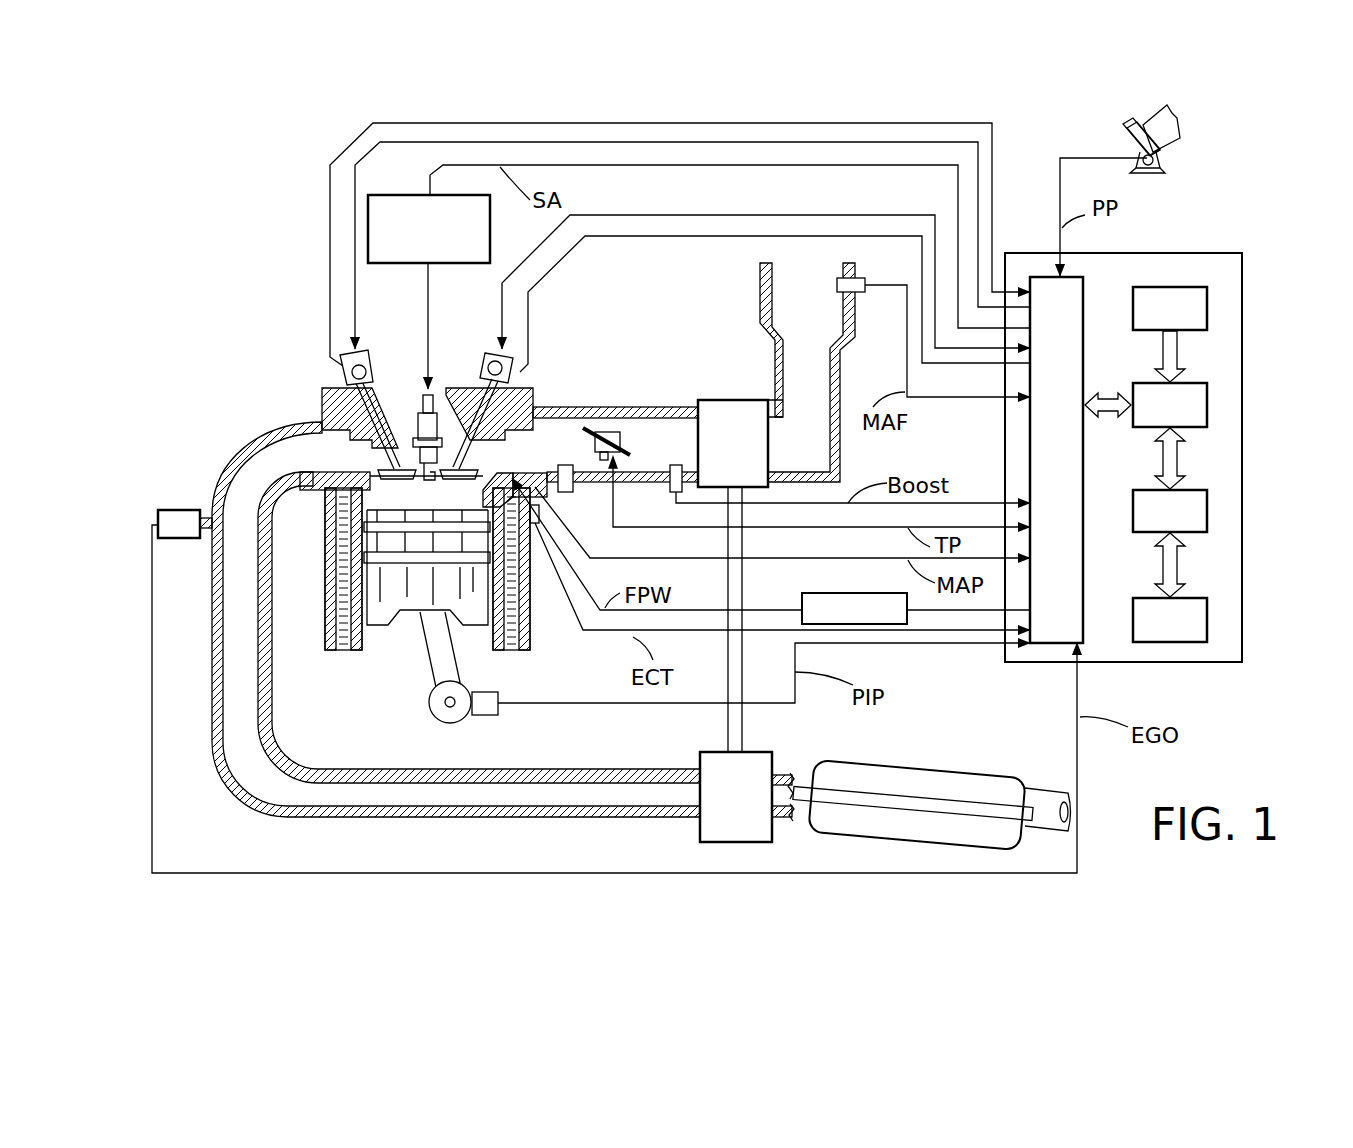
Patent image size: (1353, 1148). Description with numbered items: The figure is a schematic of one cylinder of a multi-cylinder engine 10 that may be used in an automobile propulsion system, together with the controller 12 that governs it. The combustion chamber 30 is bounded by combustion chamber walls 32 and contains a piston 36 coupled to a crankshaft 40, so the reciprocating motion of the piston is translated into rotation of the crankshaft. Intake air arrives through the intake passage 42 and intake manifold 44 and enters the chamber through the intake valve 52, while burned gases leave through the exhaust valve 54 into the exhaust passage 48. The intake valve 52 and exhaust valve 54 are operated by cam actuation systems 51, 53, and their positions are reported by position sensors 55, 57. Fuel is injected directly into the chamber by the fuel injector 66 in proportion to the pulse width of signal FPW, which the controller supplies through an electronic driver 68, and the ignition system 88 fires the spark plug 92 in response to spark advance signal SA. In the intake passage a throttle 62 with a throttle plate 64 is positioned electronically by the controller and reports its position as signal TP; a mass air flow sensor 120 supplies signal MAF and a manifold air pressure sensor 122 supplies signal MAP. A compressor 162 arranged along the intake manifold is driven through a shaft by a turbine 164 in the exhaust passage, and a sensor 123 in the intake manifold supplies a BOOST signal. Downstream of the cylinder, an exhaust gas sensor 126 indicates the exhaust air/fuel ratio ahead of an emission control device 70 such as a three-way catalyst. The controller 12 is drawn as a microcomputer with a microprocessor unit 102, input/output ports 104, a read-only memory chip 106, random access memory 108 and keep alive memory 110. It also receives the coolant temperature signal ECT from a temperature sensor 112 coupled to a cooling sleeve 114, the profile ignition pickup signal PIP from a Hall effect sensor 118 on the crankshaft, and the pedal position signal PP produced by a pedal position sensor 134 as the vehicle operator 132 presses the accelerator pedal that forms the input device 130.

The engine 10 is at (252, 333).
The controller 12 is at (1230, 253).
The combustion chamber 30 is at (427, 492).
The combustion chamber walls 32 is at (365, 648).
The piston 36 is at (410, 597).
The crankshaft 40 is at (435, 722).
The intake passage 42 is at (807, 372).
The intake manifold 44 is at (615, 444).
The exhaust passage 48 is at (456, 619).
The cam actuation system 51 is at (487, 348).
The intake valve 52 is at (443, 466).
The cam actuation system 53 is at (373, 348).
The exhaust valve 54 is at (325, 430).
The position sensor 55 is at (517, 377).
The position sensor 57 is at (345, 368).
The throttle 62 is at (612, 432).
The throttle plate 64 is at (587, 428).
The fuel injector 66 is at (494, 477).
The electronic driver 68 is at (830, 598).
The emission control device 70 is at (1000, 768).
The ignition system 88 is at (383, 195).
The spark plug 92 is at (425, 427).
The microprocessor unit 102 is at (1207, 403).
The input/output ports 104 is at (1085, 283).
The read-only memory chip 106 is at (1207, 300).
The random access memory 108 is at (1207, 510).
The keep alive memory 110 is at (1207, 618).
The temperature sensor 112 is at (541, 560).
The cooling sleeve 114 is at (527, 613).
The Hall effect sensor 118 is at (487, 716).
The mass air flow sensor 120 is at (857, 277).
The manifold air pressure sensor 122 is at (563, 492).
The sensor 123 is at (671, 492).
The exhaust gas sensor 126 is at (158, 511).
The input device 130 is at (1128, 140).
The vehicle operator 132 is at (1177, 120).
The pedal position sensor 134 is at (1160, 160).
The compressor 162 is at (730, 400).
The turbine 164 is at (700, 828).